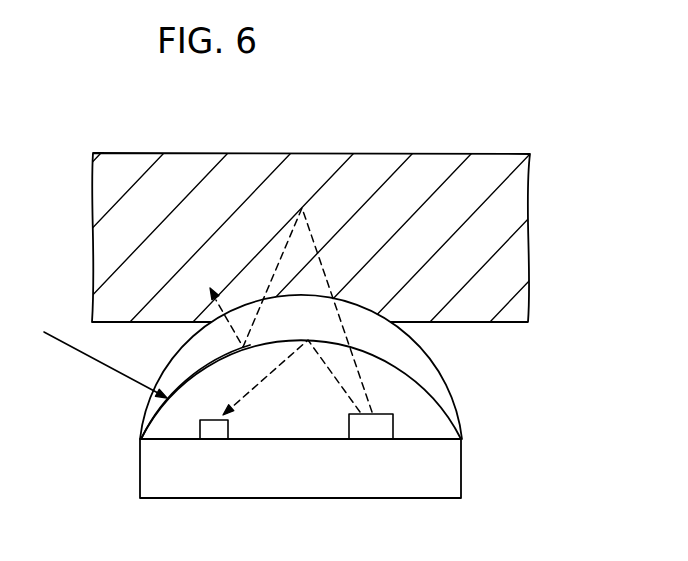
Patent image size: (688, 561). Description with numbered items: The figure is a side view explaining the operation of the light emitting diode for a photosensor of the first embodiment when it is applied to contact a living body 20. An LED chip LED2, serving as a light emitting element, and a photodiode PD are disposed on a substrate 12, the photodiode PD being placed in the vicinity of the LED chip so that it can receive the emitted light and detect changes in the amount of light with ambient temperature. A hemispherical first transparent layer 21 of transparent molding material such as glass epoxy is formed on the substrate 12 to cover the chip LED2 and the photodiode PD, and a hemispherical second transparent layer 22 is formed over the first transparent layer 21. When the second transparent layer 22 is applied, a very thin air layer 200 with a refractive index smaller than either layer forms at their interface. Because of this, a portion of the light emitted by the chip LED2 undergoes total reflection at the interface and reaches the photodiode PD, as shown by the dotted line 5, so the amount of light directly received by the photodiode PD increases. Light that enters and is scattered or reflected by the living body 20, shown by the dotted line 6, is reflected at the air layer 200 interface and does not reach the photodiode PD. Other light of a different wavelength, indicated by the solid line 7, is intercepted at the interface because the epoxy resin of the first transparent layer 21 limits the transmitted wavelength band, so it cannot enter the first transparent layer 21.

The living body 20 is at (500, 242).
The second transparent layer 22 is at (415, 358).
The first transparent layer 21 is at (418, 398).
The air layer 200 is at (200, 372).
The substrate 12 is at (445, 475).
The photodiode PD is at (212, 437).
The LED chip LED2 is at (380, 425).
The dotted line 6 is at (291, 310).
The dotted line 5 is at (291, 377).
The solid line 7 is at (104, 365).